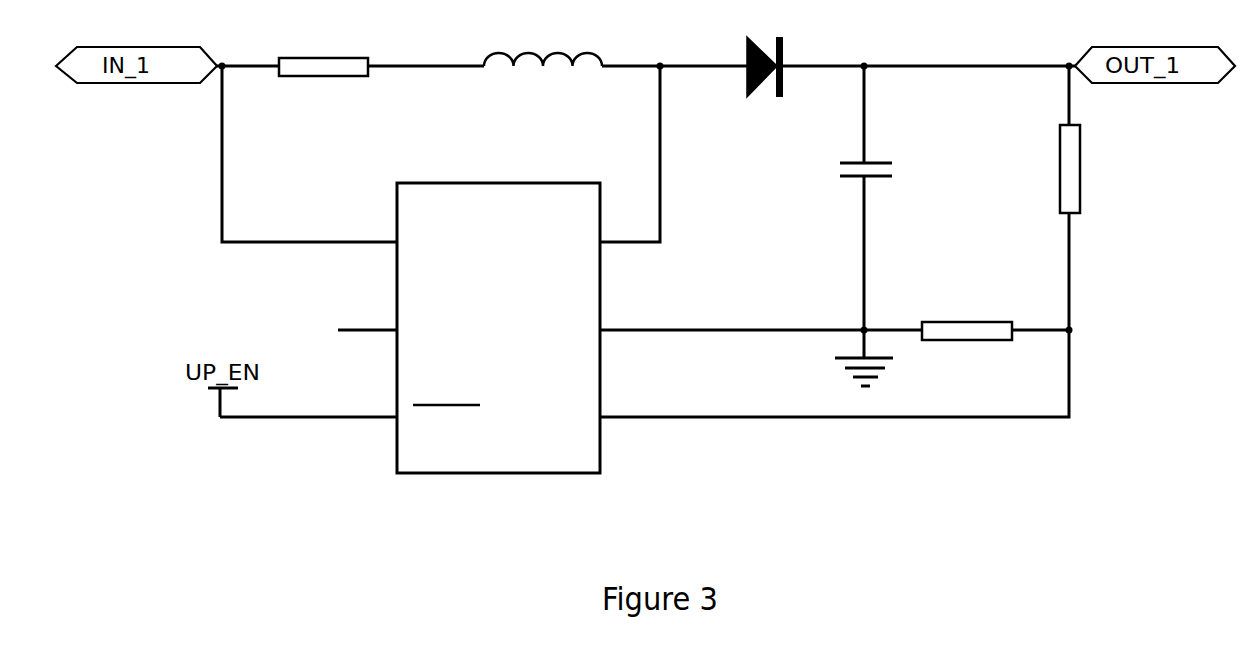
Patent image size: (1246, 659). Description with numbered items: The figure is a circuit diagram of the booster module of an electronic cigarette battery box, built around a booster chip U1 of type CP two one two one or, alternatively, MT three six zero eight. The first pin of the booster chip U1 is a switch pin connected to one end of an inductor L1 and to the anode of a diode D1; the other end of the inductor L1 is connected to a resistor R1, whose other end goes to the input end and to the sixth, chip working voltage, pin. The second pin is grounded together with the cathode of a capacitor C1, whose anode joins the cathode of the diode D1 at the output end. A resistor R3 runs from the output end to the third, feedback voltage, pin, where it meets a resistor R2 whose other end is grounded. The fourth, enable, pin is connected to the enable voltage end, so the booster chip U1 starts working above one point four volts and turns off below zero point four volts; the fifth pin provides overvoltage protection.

The resistor R1 is at (323, 68).
The inductor L1 is at (539, 58).
The diode D1 is at (742, 73).
The capacitor C1 is at (904, 181).
The resistor R2 is at (966, 331).
The resistor R3 is at (1096, 167).
The booster chip U1 is at (500, 315).